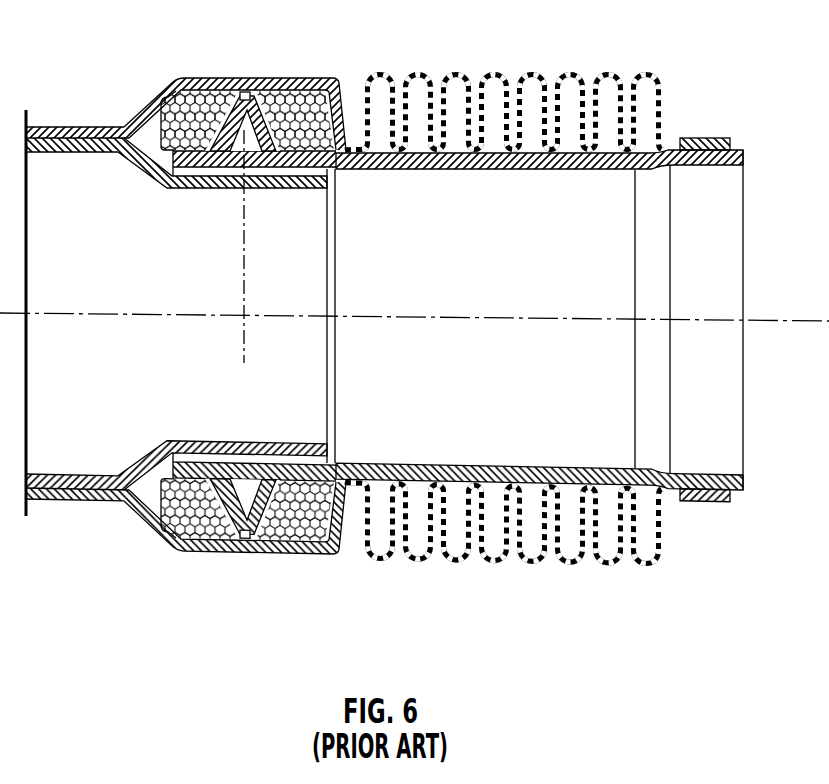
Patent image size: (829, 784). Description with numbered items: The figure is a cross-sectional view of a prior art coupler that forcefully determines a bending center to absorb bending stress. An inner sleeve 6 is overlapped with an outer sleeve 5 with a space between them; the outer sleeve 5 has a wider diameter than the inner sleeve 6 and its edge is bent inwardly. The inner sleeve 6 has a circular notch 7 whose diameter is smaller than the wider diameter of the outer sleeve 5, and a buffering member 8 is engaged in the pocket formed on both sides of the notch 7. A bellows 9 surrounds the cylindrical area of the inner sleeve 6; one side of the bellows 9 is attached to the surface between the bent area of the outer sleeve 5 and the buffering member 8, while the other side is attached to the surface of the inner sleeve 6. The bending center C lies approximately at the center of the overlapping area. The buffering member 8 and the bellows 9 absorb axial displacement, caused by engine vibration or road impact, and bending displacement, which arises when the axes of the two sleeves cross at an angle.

The outer sleeve 5 is at (145, 102).
The inner sleeve 6 is at (652, 167).
The circular notch 7 is at (213, 95).
The buffering member 8 is at (297, 91).
The bellows 9 is at (498, 80).
The bending center C is at (242, 316).